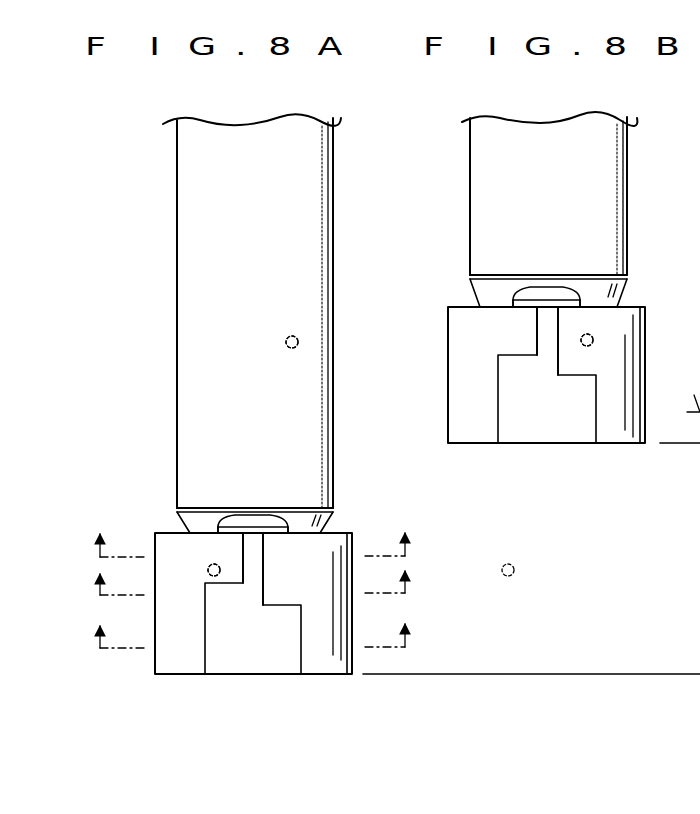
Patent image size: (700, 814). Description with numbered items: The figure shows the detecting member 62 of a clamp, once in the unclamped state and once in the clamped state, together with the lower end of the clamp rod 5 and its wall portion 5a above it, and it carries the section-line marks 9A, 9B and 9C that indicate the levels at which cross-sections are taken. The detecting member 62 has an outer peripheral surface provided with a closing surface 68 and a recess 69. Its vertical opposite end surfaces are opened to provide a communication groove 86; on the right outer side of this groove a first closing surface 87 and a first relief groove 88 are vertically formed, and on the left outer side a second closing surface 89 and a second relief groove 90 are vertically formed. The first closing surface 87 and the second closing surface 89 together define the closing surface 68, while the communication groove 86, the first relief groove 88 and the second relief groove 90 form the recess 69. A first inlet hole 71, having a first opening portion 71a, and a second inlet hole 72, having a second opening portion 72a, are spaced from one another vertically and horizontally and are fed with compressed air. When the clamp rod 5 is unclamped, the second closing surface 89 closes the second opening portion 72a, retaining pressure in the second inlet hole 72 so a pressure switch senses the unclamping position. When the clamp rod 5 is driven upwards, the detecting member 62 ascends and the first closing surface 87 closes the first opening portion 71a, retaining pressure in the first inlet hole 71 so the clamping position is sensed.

In FIG. 8A, the clamp rod 5 is at (173, 197).
In FIG. 8B, the clamp rod 5 is at (581, 209).
In FIG. 8A, the wall of tubular member 5a is at (178, 393).
In FIG. 8B, the wall of tubular member 5a is at (471, 212).
In FIG. 8A, the first opening portion 71a is at (298, 339).
In FIG. 8B, the first opening portion 71a is at (593, 336).
In FIG. 8A, the first inlet hole 71 is at (352, 341).
In FIG. 8B, the first inlet hole 71 is at (640, 324).
In FIG. 8A, the second opening portion 72a is at (208, 563).
In FIG. 8B, the second opening portion 72a is at (511, 576).
In FIG. 8A, the second inlet hole 72 is at (128, 516).
In FIG. 8A, the closing surface 68 is at (300, 438).
In FIG. 8B, the closing surface 68 is at (595, 216).
In FIG. 8A, the second closing surface 89 is at (228, 546).
In FIG. 8B, the second closing surface 89 is at (520, 326).
In FIG. 8A, the first closing surface 87 is at (276, 548).
In FIG. 8B, the first closing surface 87 is at (570, 316).
In FIG. 8A, the detecting member 62 is at (346, 677).
In FIG. 8B, the detecting member 62 is at (634, 447).
In FIG. 8A, the recess 69 is at (330, 726).
In FIG. 8B, the recess 69 is at (625, 492).
In FIG. 8A, the second relief groove 90 is at (224, 657).
In FIG. 8B, the second relief groove 90 is at (520, 427).
In FIG. 8A, the communication groove 86 is at (243, 568).
In FIG. 8B, the communication groove 86 is at (540, 340).
In FIG. 8A, the first relief groove 88 is at (285, 657).
In FIG. 8B, the first relief groove 88 is at (580, 427).
In FIG. 8A, the section line 9A is at (253, 547).
In FIG. 8A, the section line 9B is at (253, 585).
In FIG. 8A, the section line 9C is at (253, 638).